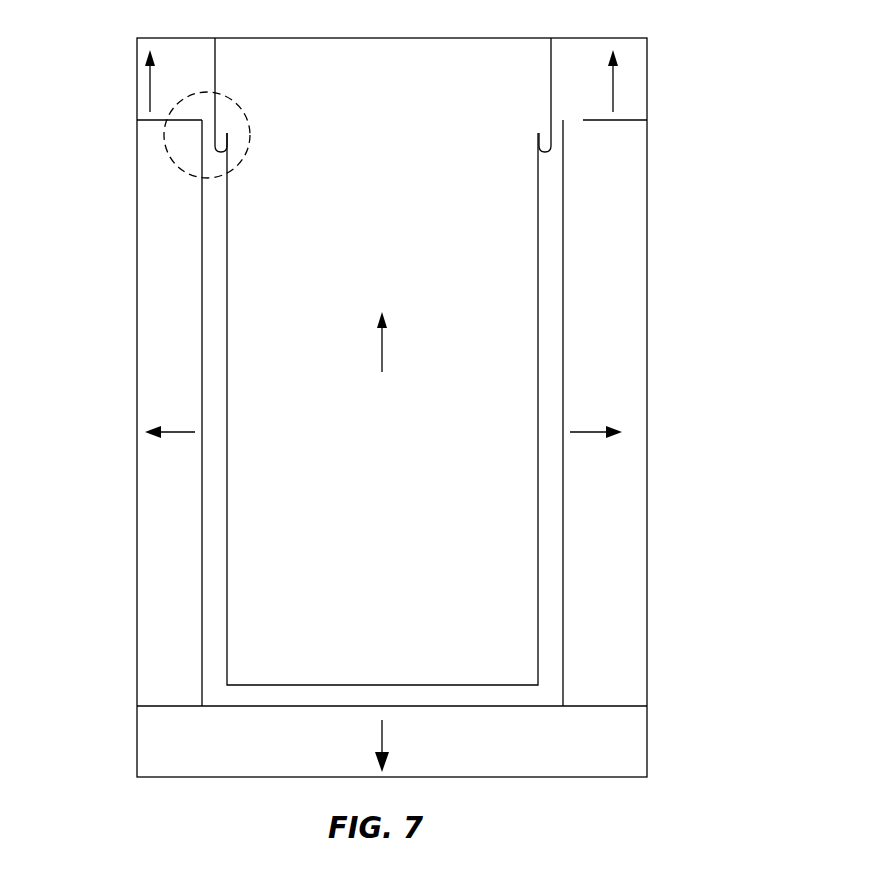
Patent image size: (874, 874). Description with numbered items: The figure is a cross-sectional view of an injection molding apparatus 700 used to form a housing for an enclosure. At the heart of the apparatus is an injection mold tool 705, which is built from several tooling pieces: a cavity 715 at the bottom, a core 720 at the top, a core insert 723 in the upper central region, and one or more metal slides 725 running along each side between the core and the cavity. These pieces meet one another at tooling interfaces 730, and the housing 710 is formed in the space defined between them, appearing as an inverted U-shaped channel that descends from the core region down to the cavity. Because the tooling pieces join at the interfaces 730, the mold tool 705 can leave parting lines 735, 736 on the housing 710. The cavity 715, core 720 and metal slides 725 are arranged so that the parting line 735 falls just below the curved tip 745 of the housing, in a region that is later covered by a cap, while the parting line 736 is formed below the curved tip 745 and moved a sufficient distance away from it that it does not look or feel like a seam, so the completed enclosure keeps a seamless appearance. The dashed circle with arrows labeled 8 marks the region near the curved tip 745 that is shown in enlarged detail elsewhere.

The injection molding apparatus 700 is at (760, 57).
The injection mold tool 705 is at (635, 267).
The housing 710 is at (553, 575).
The cavity 715 is at (633, 757).
The core 720 is at (143, 91).
The core insert 723 is at (510, 62).
The metal slide 725 is at (147, 382).
The tooling interface 730 is at (162, 121).
The parting line 735 is at (217, 128).
The parting line 736 is at (203, 121).
The curved tip 745 is at (210, 124).
The view direction of FIG. 8 is at (205, 91).